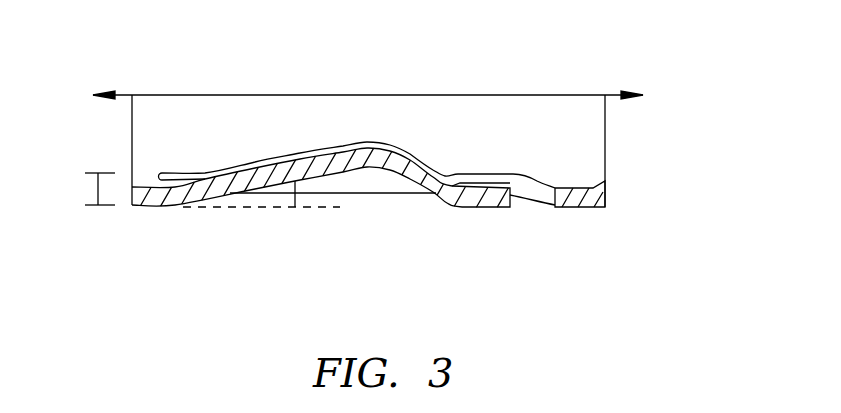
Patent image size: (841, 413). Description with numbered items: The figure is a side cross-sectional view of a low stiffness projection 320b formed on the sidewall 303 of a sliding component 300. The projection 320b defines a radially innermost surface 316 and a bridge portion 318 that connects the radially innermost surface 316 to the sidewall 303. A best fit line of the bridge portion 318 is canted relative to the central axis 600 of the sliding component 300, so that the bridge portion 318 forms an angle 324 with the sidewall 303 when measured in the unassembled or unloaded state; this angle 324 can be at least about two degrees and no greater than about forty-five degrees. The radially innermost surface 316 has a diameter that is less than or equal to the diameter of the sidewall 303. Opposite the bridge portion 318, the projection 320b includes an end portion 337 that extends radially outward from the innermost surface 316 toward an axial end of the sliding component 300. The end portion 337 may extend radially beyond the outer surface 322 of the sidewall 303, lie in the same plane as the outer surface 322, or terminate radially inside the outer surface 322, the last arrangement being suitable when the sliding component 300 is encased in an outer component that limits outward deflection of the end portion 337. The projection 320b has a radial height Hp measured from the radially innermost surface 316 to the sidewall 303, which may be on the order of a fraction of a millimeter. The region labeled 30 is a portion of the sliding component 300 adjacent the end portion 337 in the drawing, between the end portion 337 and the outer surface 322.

The sliding component 300 is at (722, 53).
The central axis 600 is at (617, 93).
The radial height Hp is at (97, 194).
The low stiffness projection 320b is at (308, 159).
The bridge portion 318 is at (247, 163).
The radially innermost surface 316 is at (378, 142).
The angle 324 is at (296, 193).
The sidewall 303 is at (131, 204).
The end portion 337 is at (480, 208).
The web section 30 is at (529, 208).
The outer surface 322 is at (591, 208).